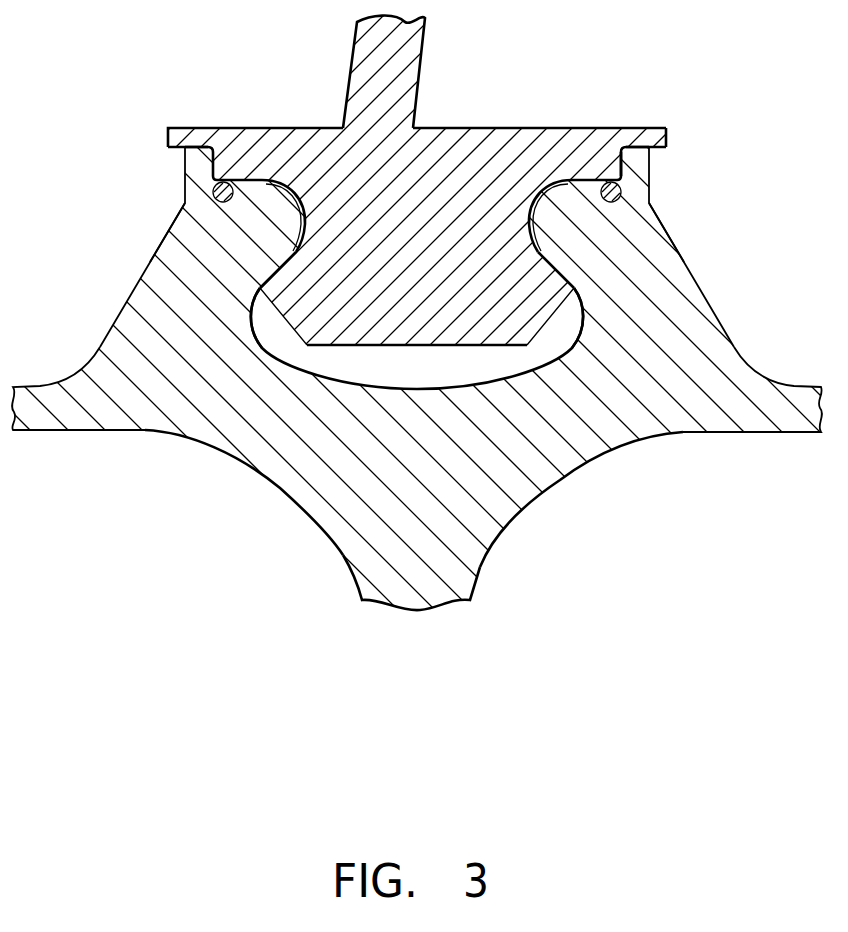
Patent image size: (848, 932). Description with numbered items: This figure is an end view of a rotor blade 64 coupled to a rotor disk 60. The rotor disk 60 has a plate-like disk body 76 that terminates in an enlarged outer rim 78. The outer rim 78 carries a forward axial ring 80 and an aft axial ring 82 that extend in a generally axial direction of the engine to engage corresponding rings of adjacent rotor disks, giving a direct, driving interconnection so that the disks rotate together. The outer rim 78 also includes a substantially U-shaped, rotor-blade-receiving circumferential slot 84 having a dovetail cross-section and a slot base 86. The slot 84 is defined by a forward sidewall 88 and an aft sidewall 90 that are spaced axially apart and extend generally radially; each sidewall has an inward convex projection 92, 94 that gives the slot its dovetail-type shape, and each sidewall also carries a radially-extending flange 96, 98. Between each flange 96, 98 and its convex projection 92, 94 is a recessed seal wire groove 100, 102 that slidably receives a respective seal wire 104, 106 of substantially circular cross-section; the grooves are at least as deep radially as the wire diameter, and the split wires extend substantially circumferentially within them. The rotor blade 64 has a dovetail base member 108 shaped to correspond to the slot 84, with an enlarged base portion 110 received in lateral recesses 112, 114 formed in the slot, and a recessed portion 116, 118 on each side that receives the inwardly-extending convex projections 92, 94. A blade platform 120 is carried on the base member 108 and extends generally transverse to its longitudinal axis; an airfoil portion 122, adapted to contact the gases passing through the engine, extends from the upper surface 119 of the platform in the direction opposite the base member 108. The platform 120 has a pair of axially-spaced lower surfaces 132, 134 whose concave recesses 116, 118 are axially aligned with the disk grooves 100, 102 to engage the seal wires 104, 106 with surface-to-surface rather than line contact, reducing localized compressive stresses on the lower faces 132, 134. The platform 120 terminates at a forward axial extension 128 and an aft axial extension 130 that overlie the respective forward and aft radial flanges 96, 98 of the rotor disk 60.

The rotor disk 60 is at (497, 503).
The rotor blade 64 is at (418, 160).
The disk body 76 is at (413, 570).
The outer rim 78 is at (247, 447).
The forward axial ring 80 is at (65, 408).
The aft axial ring 82 is at (772, 403).
The circumferential slot 84 is at (460, 383).
The slot base 86 is at (410, 383).
The forward sidewall 88 is at (167, 280).
The aft sidewall 90 is at (637, 271).
The inward convex projection 92 is at (305, 203).
The inward convex projection 94 is at (553, 213).
The radially-extending flange 96 is at (197, 165).
The radially-extending flange 98 is at (637, 163).
The seal wire groove 100 is at (182, 212).
The seal wire groove 102 is at (650, 214).
The seal wire 104 is at (216, 186).
The seal wire 106 is at (621, 196).
The base member 108 is at (445, 234).
The enlarged base portion 110 is at (440, 316).
The lateral recess 112 is at (263, 342).
The lateral recess 114 is at (571, 341).
The recessed portion 116 is at (287, 210).
The recessed portion 118 is at (548, 204).
The upper surface 119 is at (492, 128).
The blade platform 120 is at (558, 150).
The airfoil portion 122 is at (390, 52).
The forward axial extension 128 is at (188, 128).
The aft axial extension 130 is at (657, 135).
The lower surface 132 is at (257, 180).
The lower surface 134 is at (571, 182).